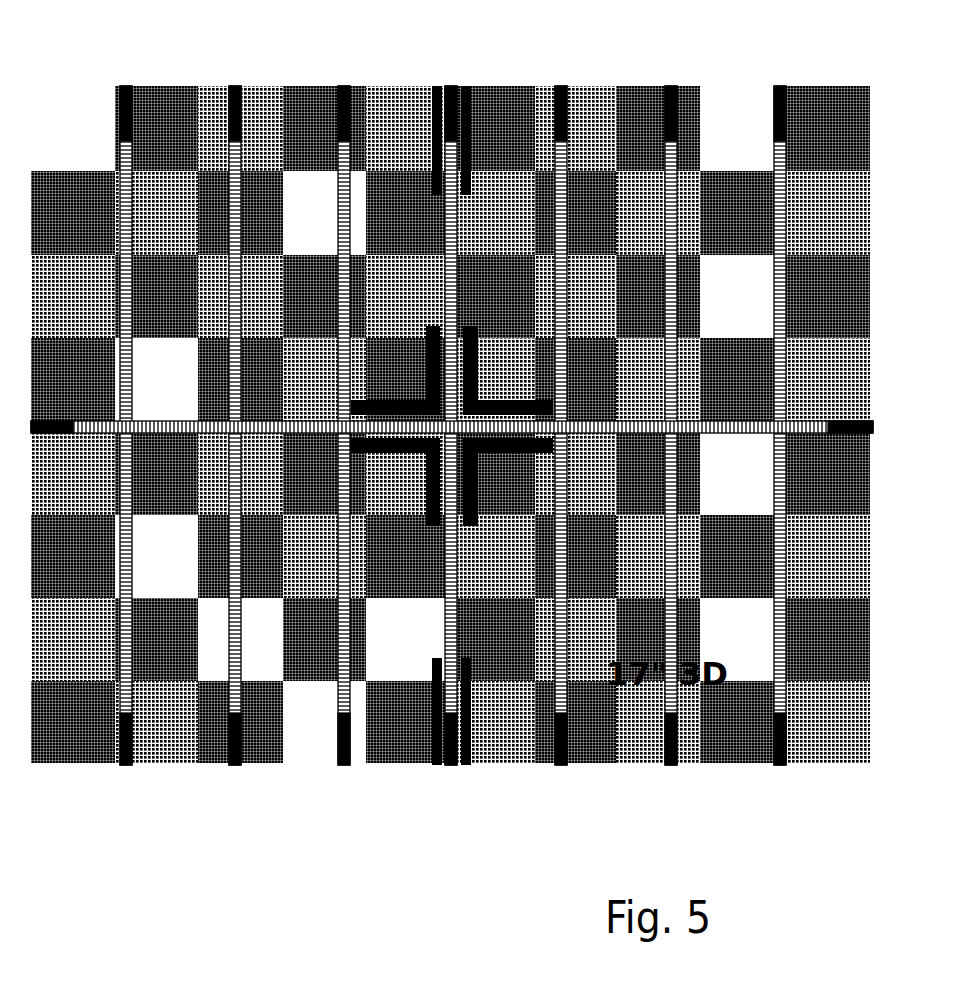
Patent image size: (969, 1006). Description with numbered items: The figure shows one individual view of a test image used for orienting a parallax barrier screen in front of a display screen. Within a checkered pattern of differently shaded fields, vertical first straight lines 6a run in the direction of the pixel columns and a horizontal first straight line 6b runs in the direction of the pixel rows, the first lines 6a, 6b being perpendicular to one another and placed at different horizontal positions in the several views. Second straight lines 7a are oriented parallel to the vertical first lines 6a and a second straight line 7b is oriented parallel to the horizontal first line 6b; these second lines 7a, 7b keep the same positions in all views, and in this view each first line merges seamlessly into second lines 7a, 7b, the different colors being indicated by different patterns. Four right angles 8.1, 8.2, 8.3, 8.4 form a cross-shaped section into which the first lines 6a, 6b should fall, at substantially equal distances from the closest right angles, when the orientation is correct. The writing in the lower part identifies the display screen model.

The first straight lines 6a is at (557, 495).
The first straight line 6b is at (785, 423).
The second straight lines 7a is at (559, 96).
The second straight line 7b is at (45, 422).
The right angle 8.1 is at (476, 333).
The right angle 8.2 is at (476, 476).
The right angle 8.3 is at (418, 480).
The right angle 8.4 is at (417, 350).